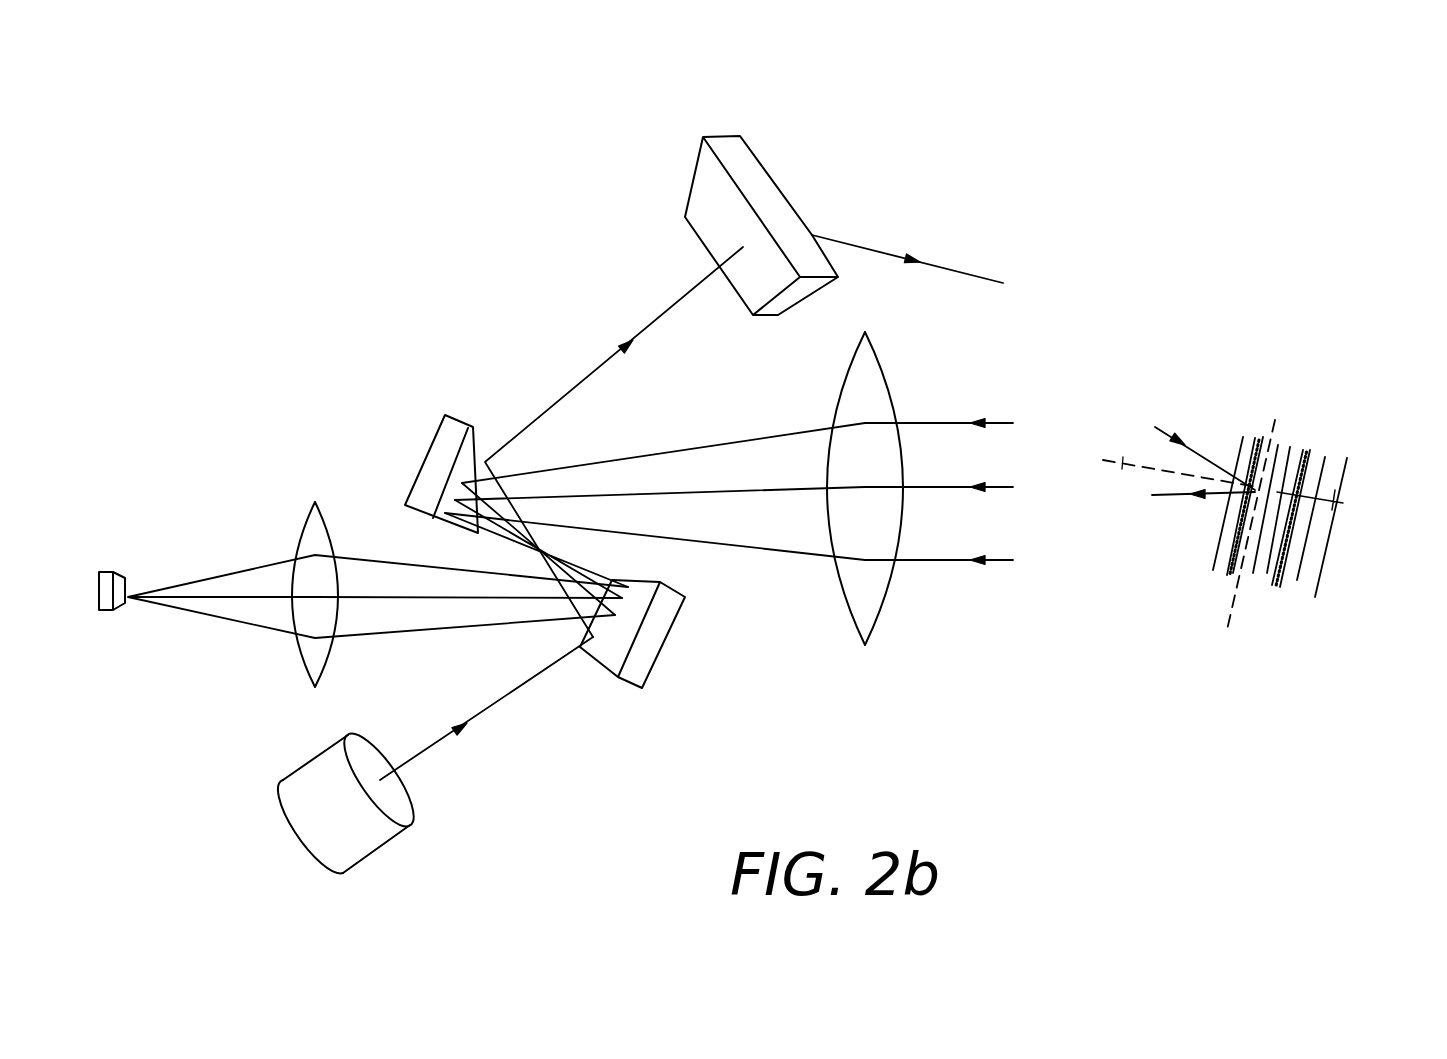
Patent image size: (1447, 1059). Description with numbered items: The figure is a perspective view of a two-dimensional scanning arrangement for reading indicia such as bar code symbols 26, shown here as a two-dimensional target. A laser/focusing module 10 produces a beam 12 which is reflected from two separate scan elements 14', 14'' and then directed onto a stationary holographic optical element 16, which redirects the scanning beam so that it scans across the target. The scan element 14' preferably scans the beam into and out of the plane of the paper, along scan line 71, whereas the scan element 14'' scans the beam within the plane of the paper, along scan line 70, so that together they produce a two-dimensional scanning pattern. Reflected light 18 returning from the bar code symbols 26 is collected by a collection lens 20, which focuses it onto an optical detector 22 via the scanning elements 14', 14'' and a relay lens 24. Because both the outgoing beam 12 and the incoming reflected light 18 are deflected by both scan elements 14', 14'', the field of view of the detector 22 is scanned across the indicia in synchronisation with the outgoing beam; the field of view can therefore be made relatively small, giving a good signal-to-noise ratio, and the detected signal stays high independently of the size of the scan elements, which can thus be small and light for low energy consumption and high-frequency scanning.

The laser/focusing module 10 is at (322, 822).
The beam 12 is at (443, 742).
The scan element 14' is at (655, 653).
The scan element 14'' is at (416, 449).
The holographic optical element 16 is at (712, 185).
The reflected light 18 is at (1017, 403).
The collection lens 20 is at (873, 592).
The optical detector 22 is at (112, 612).
The relay lens 24 is at (302, 518).
The bar code symbols 26 is at (1268, 570).
The scan line 70 is at (1277, 413).
The scan line 71 is at (1123, 463).